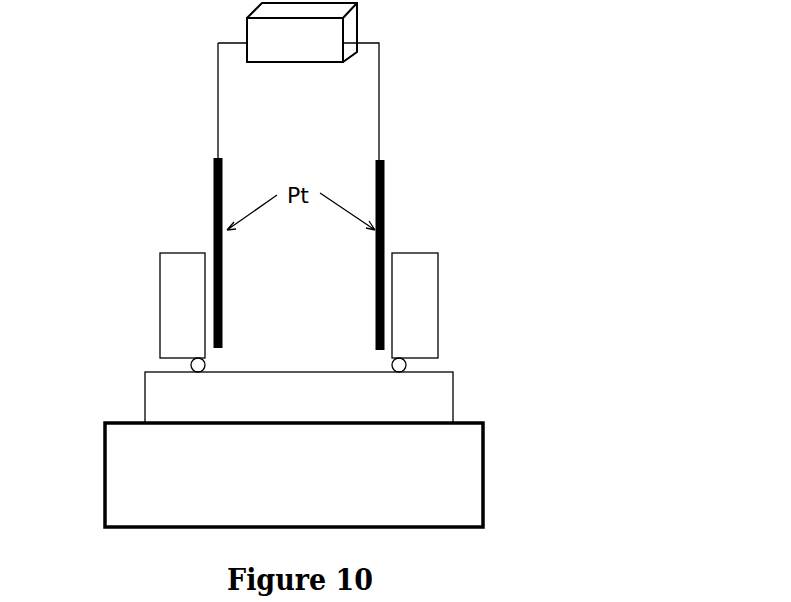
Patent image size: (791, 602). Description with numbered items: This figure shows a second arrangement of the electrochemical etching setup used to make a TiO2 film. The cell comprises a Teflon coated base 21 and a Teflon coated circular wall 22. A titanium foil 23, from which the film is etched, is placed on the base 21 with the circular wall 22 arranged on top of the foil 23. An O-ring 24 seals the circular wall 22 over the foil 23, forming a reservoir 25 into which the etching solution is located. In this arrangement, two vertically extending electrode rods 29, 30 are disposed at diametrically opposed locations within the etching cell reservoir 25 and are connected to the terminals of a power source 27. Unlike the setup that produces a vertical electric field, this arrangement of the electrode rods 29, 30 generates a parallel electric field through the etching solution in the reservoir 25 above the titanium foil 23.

The Teflon coated base 21 is at (440, 473).
The Teflon coated circular wall 22 is at (432, 320).
The titanium foil 23 is at (157, 400).
The O-ring 24 is at (190, 360).
The reservoir 25 is at (289, 305).
The power source 27 is at (292, 77).
The electrode rod 29 is at (213, 180).
The electrode rod 30 is at (385, 175).